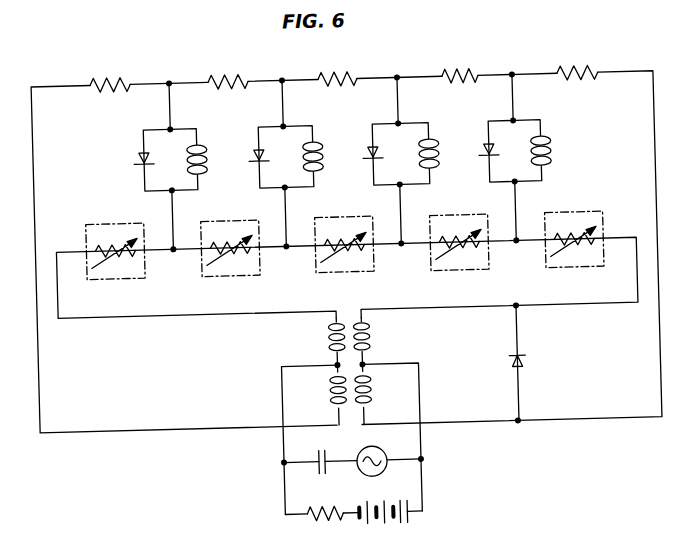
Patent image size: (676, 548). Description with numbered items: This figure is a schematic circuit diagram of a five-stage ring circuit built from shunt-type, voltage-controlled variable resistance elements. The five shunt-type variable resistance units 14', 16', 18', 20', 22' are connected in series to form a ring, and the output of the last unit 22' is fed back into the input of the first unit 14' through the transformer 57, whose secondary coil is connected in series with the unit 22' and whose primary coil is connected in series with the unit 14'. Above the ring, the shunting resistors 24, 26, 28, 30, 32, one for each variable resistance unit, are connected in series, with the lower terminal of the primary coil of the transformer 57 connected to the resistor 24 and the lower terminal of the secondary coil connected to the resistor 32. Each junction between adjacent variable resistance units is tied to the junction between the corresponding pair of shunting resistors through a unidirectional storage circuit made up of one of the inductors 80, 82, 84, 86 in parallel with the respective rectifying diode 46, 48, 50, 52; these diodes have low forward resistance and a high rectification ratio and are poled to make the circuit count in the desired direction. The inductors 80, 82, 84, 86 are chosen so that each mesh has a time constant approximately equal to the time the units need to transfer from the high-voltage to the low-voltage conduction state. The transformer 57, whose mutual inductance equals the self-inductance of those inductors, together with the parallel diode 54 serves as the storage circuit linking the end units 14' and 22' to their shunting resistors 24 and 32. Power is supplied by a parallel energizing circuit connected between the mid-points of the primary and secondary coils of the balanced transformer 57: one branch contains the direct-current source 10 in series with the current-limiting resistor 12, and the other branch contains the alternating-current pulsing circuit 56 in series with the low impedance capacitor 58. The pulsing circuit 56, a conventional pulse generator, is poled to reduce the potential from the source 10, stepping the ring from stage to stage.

The direct-current source 10 is at (380, 504).
The current-limiting resistor 12 is at (320, 508).
The shunt-type variable resistance unit 14' is at (116, 264).
The shunt-type variable resistance unit 16' is at (231, 262).
The shunt-type variable resistance unit 18' is at (335, 257).
The shunt-type variable resistance unit 20' is at (460, 256).
The shunt-type variable resistance unit 22' is at (575, 253).
The shunting resistor 24 is at (112, 73).
The shunting resistor 26 is at (232, 69).
The shunting resistor 28 is at (349, 72).
The shunting resistor 30 is at (463, 70).
The shunting resistor 32 is at (578, 69).
The rectifying diode 46 is at (137, 159).
The rectifying diode 48 is at (252, 159).
The rectifying diode 50 is at (366, 159).
The rectifying diode 52 is at (482, 159).
The diode 54 is at (523, 360).
The alternating-current pulsing circuit 56 is at (380, 451).
The transformer 57 is at (348, 330).
The low impedance capacitor 58 is at (324, 458).
The inductor 80 is at (208, 148).
The inductor 82 is at (324, 148).
The inductor 84 is at (447, 148).
The inductor 86 is at (559, 146).